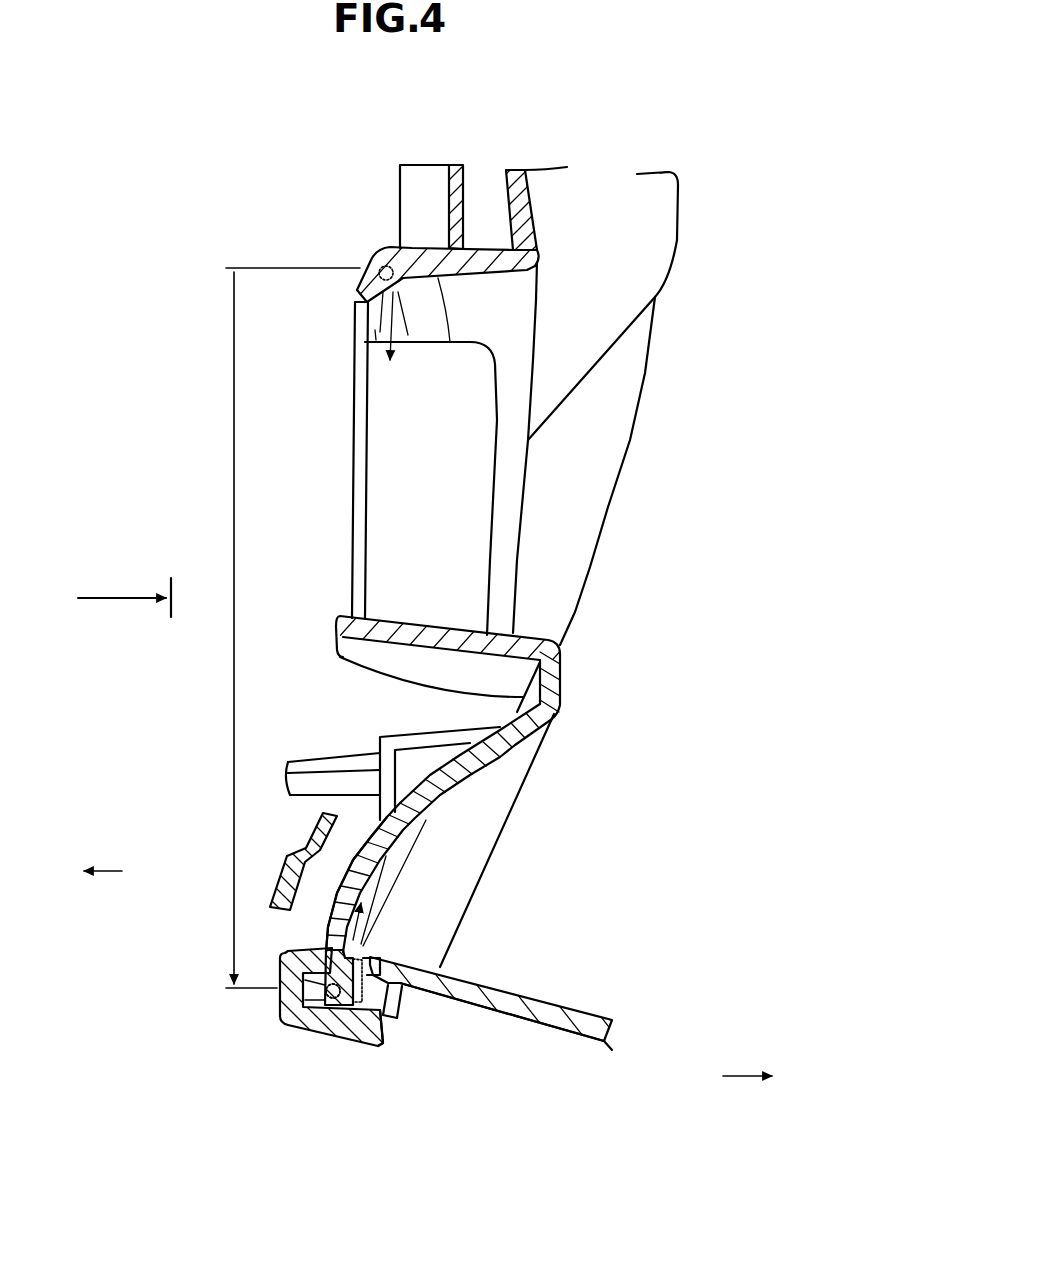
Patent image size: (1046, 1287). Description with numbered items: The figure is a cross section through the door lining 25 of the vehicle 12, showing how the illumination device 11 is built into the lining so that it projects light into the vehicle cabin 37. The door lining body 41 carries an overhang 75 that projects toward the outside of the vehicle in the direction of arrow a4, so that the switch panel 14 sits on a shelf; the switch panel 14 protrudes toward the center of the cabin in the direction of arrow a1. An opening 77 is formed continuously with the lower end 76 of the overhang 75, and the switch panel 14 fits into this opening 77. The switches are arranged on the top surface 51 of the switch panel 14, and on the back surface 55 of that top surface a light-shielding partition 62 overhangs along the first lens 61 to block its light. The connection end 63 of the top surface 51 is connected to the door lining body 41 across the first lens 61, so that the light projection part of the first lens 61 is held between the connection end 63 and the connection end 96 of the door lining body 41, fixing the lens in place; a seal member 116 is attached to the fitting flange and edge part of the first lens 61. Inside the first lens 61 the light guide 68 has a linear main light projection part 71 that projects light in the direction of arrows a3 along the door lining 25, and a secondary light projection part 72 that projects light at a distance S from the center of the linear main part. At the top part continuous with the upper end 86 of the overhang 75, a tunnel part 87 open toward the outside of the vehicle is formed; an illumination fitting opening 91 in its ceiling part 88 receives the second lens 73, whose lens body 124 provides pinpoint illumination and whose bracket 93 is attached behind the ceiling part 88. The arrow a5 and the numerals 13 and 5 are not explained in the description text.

The illumination device 11 is at (670, 724).
The vehicle 12 is at (262, 134).
The outer frame 13 is at (534, 134).
The switch panel 14 is at (592, 970).
The door lining 25 is at (695, 203).
The vehicle cabin 37 is at (807, 142).
The door lining body 41 is at (564, 668).
The top surface 51 is at (578, 1011).
The back surface 55 is at (495, 1010).
The first lens 61 is at (382, 934).
The light-shielding partition 62 is at (399, 1019).
The connection end 63 is at (368, 951).
The light guide 68 is at (336, 998).
The linear main light projection part 71 is at (336, 998).
The secondary light projection part 72 is at (384, 252).
The second lens 73 is at (355, 230).
The overhang 75 is at (457, 795).
The lower end 76 is at (330, 922).
The opening 77 is at (379, 1040).
The upper end 86 is at (557, 720).
The tunnel part 87 is at (433, 620).
The ceiling part 88 is at (480, 276).
The illumination fitting opening 91 is at (407, 282).
The bracket 93 is at (427, 163).
The connection end 96 is at (337, 933).
The seal member 116 is at (352, 1010).
The lens body 124 is at (403, 285).
The distance S is at (284, 628).
The section line 5 is at (124, 580).
The arrow a1 is at (747, 1062).
The arrows a3 is at (378, 893).
The arrow a4 is at (105, 859).
The direction a5 is at (392, 343).